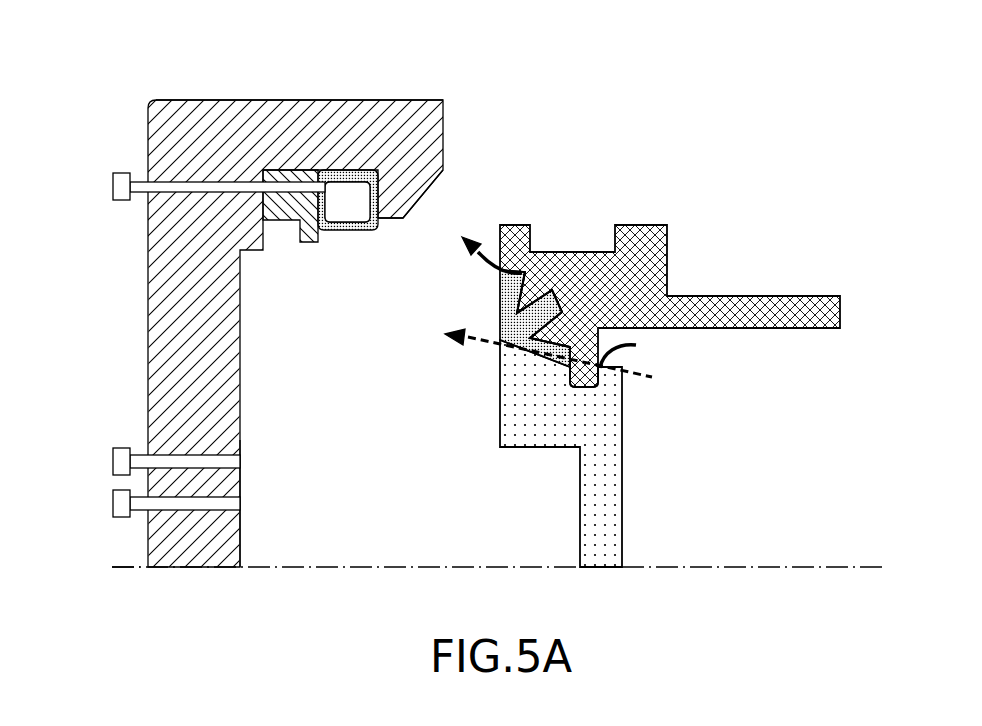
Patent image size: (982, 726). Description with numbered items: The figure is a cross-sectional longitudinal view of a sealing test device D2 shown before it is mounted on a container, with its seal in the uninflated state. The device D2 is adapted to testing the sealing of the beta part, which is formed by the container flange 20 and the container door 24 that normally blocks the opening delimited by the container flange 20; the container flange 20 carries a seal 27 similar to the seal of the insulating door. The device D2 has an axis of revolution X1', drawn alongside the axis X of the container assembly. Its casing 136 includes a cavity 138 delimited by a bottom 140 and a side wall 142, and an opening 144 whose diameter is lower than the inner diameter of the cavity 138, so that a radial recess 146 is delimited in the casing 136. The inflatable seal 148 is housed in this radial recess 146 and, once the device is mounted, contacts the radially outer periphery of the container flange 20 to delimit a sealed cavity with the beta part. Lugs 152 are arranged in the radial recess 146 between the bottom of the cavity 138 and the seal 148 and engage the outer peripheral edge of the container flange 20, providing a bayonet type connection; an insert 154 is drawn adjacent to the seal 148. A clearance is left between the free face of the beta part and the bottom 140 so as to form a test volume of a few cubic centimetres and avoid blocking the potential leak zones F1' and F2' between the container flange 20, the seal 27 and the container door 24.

The container flange 20 is at (610, 193).
The container door 24 is at (622, 457).
The seal 27 is at (556, 300).
The casing 136 is at (374, 96).
The cavity 138 is at (257, 518).
The bottom 140 is at (157, 353).
The side wall 142 is at (282, 100).
The opening 144 is at (398, 226).
The radial recess 146 is at (369, 190).
The inflatable seal 148 is at (347, 242).
The lugs 152 is at (517, 225).
The insert 154 is at (273, 237).
The sealing test device D2 is at (184, 66).
The potential leak zone F1' is at (542, 376).
The potential leak zone F2' is at (457, 306).
The axis X is at (857, 569).
The axis of revolution X1' is at (141, 600).